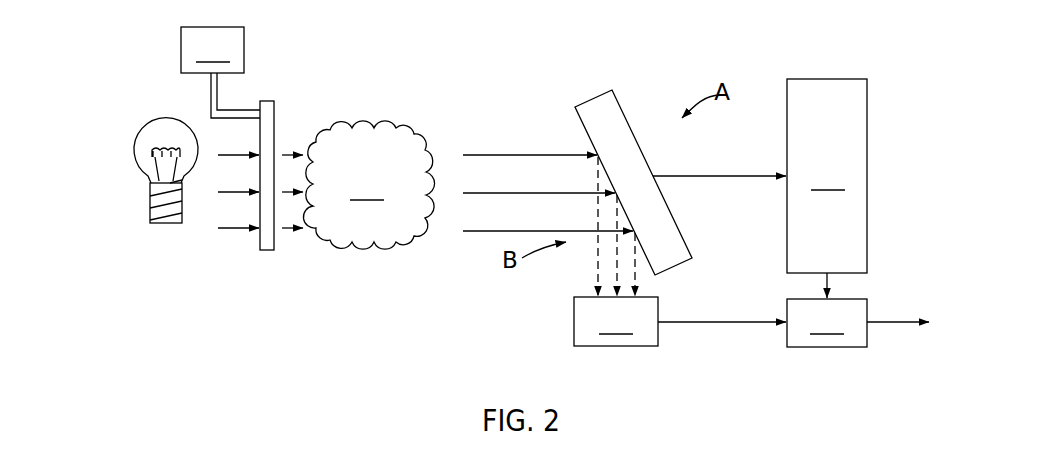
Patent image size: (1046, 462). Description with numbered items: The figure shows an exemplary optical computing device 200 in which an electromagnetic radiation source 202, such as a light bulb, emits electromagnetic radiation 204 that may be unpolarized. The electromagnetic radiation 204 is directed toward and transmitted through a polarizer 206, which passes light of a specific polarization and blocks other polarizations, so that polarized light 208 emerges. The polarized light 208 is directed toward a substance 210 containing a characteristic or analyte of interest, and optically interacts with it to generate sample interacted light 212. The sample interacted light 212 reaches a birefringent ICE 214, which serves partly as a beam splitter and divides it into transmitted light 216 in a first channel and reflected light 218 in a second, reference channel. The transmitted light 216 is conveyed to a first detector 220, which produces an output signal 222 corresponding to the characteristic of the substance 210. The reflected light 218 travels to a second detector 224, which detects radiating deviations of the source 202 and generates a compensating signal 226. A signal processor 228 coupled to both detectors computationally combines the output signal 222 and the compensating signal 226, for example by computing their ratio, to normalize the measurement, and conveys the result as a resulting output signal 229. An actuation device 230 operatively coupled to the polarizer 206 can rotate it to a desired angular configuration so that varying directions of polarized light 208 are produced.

The optical computing device 200 is at (425, 66).
The electromagnetic radiation source 202 is at (152, 121).
The electromagnetic radiation 204 is at (235, 234).
The polarizer 206 is at (275, 106).
The polarized light 208 is at (288, 236).
The substance 210 is at (368, 185).
The sample interacted light 212 is at (520, 153).
The ICE 214 is at (620, 103).
The transmitted light 216 is at (698, 176).
The reflected light 218 is at (597, 270).
The first detector 220 is at (827, 176).
The output signal 222 is at (825, 281).
The second detector 224 is at (616, 321).
The compensating signal 226 is at (703, 322).
The signal processor 228 is at (827, 323).
The resulting output signal 229 is at (897, 322).
The actuation device 230 is at (220, 72).